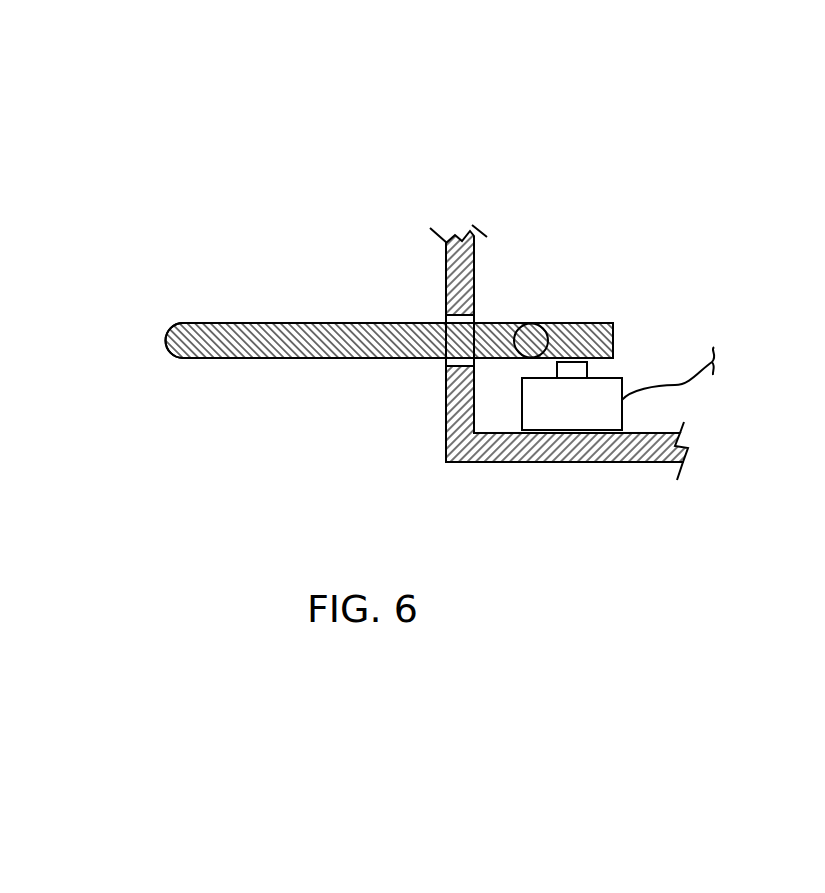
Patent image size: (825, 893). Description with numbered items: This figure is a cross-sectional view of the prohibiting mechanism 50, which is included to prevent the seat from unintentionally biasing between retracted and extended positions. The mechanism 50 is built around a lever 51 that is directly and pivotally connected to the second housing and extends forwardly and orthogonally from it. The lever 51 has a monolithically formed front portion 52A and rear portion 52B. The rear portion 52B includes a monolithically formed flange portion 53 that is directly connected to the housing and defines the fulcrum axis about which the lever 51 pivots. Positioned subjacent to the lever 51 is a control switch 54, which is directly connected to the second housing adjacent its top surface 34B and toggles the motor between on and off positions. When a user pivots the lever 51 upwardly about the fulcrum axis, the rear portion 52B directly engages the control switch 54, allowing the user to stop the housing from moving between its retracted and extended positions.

The prohibiting mechanism 50 is at (311, 193).
The lever 51 is at (288, 358).
The front portion 52A is at (167, 338).
The rear portion 52B is at (615, 337).
The flange portion 53 is at (540, 333).
The control switch 54 is at (614, 377).
The top surface 34B is at (622, 463).